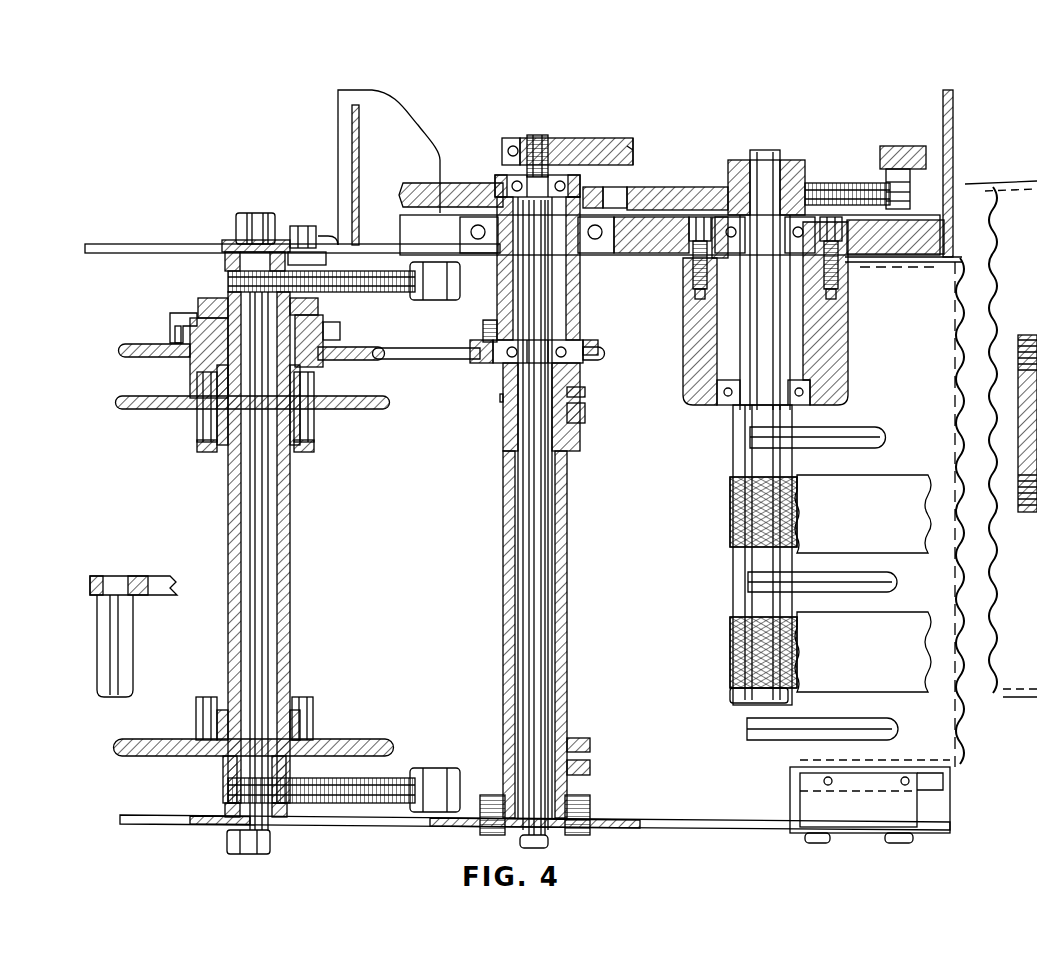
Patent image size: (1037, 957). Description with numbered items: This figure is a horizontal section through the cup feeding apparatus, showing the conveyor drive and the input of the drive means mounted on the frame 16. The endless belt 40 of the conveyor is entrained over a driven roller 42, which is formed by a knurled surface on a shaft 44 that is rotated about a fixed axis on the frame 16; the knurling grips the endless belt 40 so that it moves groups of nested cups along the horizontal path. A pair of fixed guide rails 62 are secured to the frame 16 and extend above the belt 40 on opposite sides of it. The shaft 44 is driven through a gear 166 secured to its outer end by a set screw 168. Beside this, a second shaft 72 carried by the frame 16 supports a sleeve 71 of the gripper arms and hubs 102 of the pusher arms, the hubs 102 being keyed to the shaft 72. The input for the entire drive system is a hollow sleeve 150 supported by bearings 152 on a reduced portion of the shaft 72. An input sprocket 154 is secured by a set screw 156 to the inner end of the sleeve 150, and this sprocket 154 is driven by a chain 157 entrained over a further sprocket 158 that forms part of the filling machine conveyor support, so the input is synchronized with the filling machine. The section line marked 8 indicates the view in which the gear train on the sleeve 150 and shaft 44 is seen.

The frame 16 is at (948, 238).
The endless belt 40 is at (900, 667).
The driven roller 42 is at (735, 662).
The shaft 44 is at (790, 230).
The fixed guide rails 62 is at (762, 582).
The sleeve 71 is at (504, 527).
The shaft 72 is at (536, 584).
The hubs 102 is at (500, 383).
The hollow sleeve 150 is at (578, 302).
The bearings 152 is at (497, 176).
The input sprocket 154 is at (604, 358).
The set screw 156 is at (483, 324).
The chain 157 is at (428, 357).
The sprocket 158 is at (150, 345).
The gear 166 is at (678, 188).
The set screw 168 is at (714, 176).
The section line 8- 8 is at (378, 223).